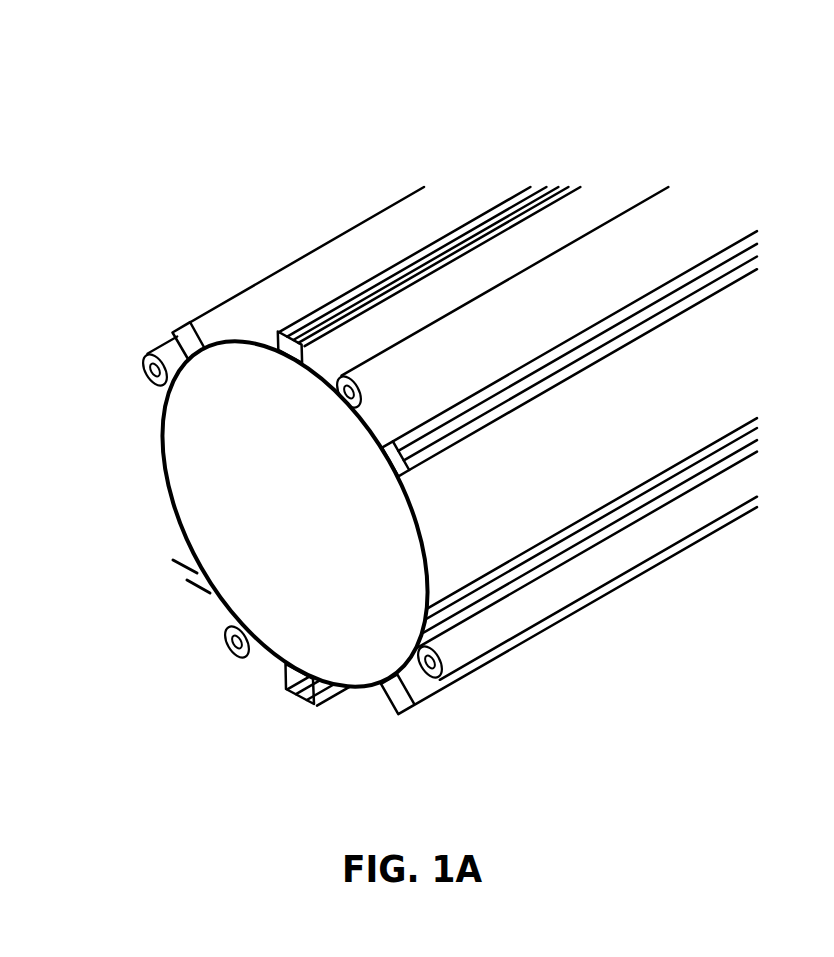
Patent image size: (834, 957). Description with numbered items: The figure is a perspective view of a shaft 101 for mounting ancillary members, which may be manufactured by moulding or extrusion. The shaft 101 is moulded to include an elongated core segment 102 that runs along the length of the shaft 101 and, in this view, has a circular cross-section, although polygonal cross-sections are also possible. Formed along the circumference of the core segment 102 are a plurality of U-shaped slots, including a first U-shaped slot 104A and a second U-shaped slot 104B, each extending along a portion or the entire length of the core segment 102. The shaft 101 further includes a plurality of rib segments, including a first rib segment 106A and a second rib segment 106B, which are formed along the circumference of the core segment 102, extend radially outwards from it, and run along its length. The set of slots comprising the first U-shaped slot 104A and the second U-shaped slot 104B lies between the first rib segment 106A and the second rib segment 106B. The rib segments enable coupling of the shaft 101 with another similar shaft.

The shaft 101 is at (465, 420).
The elongated core segment 102 is at (246, 341).
The first U-shaped slot 104A is at (293, 698).
The second U-shaped slot 104B is at (417, 691).
The first rib segment 106A is at (234, 658).
The second rib segment 106B is at (479, 641).